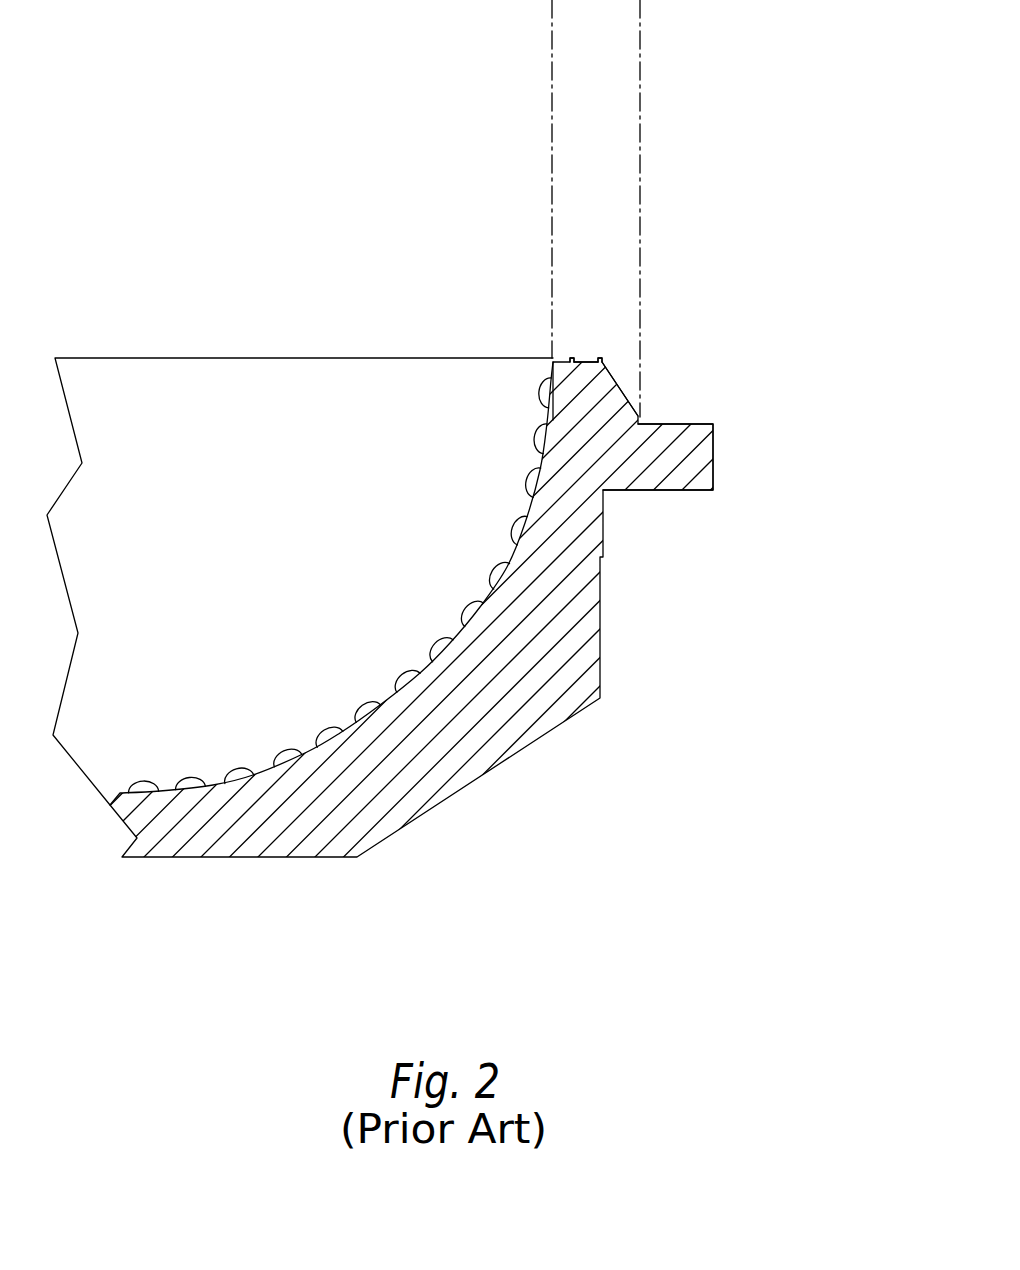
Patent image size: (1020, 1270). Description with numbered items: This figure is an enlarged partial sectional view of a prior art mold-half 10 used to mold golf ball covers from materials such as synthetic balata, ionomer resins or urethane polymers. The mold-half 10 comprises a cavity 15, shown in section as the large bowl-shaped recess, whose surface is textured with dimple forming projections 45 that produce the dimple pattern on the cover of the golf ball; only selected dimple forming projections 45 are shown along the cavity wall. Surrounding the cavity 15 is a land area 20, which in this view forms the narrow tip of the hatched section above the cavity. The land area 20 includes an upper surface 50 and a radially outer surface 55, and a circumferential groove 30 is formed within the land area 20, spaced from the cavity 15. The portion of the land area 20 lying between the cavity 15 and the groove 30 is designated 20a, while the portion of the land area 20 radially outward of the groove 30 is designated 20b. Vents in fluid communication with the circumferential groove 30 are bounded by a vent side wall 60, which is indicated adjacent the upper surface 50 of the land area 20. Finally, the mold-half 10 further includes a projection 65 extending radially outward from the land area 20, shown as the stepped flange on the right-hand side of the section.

The mold-half 10 is at (488, 809).
The cavity 15 is at (270, 659).
The land area 20 is at (738, 22).
The portion of the land area between the cavity and the groove 20a is at (566, 358).
The portion of the land area radially outward of the groove 20b is at (601, 359).
The circumferential groove 30 is at (571, 357).
The dimple forming projections 45 is at (462, 600).
The upper surface 50 is at (583, 284).
The radially outer surface 55 is at (628, 412).
The vent side wall 60 is at (597, 360).
The projection 65 is at (713, 450).